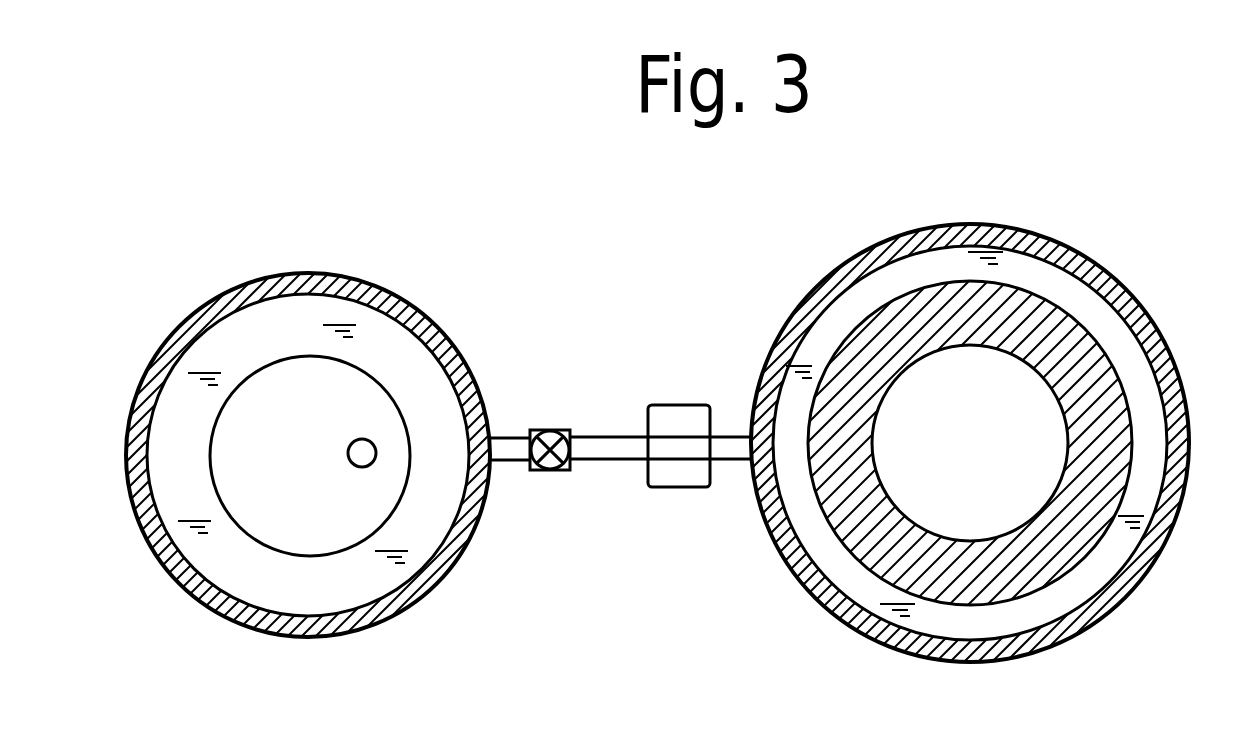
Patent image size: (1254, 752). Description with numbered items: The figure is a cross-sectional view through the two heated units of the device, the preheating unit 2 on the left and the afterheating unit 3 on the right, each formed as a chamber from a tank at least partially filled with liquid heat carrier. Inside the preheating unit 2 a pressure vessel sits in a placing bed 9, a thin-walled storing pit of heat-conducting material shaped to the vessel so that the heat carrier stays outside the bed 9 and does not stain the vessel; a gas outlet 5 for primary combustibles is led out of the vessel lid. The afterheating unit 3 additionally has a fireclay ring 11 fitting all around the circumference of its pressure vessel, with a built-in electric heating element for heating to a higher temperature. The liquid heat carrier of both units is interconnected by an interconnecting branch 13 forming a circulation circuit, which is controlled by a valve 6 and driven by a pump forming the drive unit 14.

The preheating unit 2 is at (430, 314).
The afterheating unit 3 is at (1140, 303).
The gas outlet 5 is at (352, 462).
The valve 6 is at (558, 428).
The placing bed 9 is at (237, 529).
The fireclay ring 11 is at (1053, 563).
The interconnecting branch 13 is at (593, 450).
The drive unit 14 is at (685, 480).